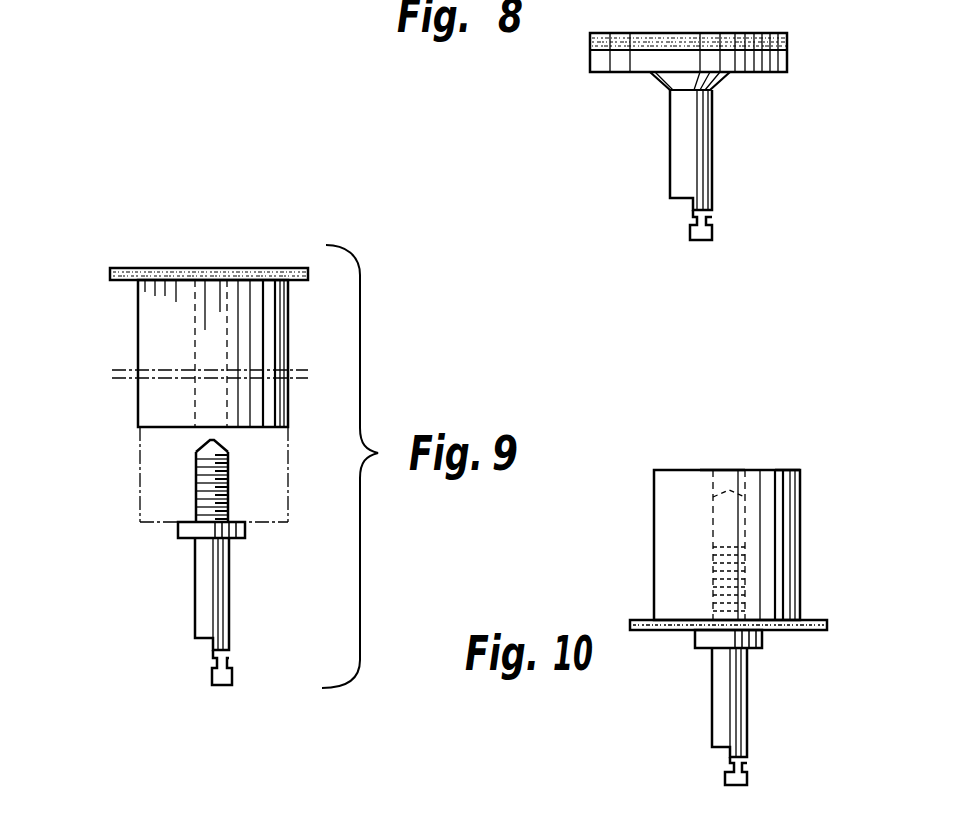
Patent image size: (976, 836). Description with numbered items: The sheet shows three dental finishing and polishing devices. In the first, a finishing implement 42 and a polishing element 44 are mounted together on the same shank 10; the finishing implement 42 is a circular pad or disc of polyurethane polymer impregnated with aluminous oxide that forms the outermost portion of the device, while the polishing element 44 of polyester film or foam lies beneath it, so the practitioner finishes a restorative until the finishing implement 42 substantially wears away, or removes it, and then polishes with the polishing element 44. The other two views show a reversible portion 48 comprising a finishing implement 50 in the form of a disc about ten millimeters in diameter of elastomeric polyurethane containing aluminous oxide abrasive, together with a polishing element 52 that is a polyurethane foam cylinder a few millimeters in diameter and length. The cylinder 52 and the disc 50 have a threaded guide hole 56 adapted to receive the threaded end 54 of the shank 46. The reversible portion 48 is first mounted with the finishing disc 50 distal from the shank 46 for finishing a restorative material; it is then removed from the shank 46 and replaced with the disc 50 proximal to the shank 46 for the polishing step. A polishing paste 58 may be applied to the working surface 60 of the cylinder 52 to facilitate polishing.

In FIG. 8, the shank 10 is at (711, 148).
In FIG. 8, the finishing implement 42 is at (767, 33).
In FIG. 8, the polishing element 44 is at (787, 60).
In FIG. 9, the shank 46 is at (259, 551).
In FIG. 10, the shank 46 is at (748, 710).
In FIG. 9, the reversible portion 48 is at (188, 325).
In FIG. 10, the reversible portion 48 is at (737, 534).
In FIG. 9, the finishing implement 50 is at (188, 268).
In FIG. 10, the finishing implement 50 is at (827, 625).
In FIG. 9, the polishing element 52 is at (288, 327).
In FIG. 10, the polishing element 52 is at (654, 558).
In FIG. 9, the threaded end 54 is at (268, 470).
In FIG. 9, the threaded guide hole 56 is at (218, 418).
In FIG. 10, the polishing paste 58 is at (723, 470).
In FIG. 10, the working surface 60 is at (778, 470).